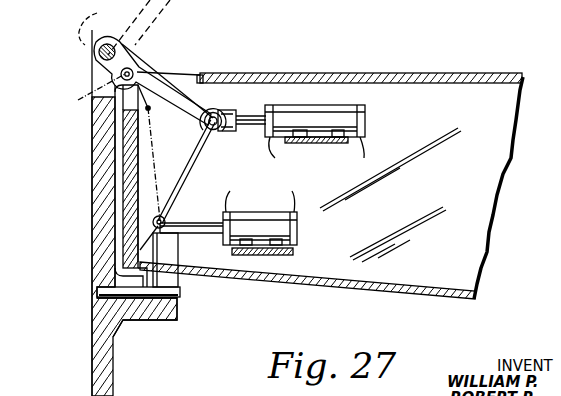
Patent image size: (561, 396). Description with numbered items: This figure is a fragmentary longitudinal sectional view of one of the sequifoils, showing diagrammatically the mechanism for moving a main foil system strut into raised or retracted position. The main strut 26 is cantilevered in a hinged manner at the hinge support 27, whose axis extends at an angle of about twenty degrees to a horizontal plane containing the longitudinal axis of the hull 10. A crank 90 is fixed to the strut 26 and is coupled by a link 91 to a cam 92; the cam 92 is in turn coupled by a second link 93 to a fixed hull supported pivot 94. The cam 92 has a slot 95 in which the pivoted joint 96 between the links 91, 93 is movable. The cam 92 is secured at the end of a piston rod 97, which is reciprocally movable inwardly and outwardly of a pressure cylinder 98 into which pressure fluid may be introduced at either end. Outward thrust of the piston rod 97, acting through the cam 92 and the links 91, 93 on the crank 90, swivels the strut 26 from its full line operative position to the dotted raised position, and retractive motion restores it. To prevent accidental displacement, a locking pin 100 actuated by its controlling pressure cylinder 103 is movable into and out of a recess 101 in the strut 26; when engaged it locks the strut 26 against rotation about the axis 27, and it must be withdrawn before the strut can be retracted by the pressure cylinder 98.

The hull 10 is at (474, 74).
The main strut 26 is at (94, 392).
The hinge support 27 is at (100, 56).
The crank 90 is at (84, 19).
The link 91 is at (204, 68).
The cam 92 is at (232, 111).
The link 93 is at (203, 147).
The fixed hull supported pivot 94 is at (167, 218).
The slot 95 is at (213, 106).
The pivoted joint 96 is at (206, 121).
The piston rod 97 is at (258, 113).
The pressure cylinder 98 is at (368, 113).
The locking pin 100 is at (181, 297).
The recess 101 is at (102, 313).
The pressure cylinder 103 is at (300, 238).